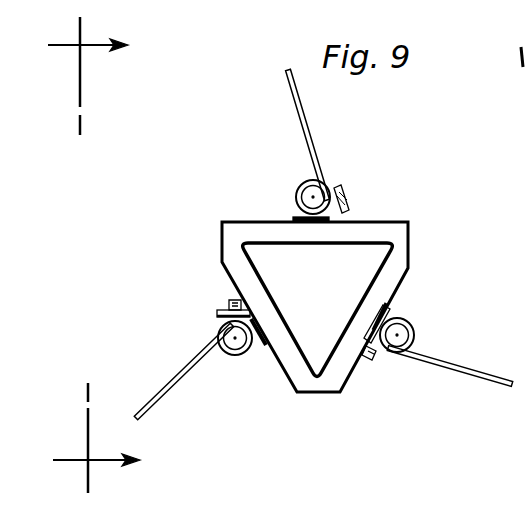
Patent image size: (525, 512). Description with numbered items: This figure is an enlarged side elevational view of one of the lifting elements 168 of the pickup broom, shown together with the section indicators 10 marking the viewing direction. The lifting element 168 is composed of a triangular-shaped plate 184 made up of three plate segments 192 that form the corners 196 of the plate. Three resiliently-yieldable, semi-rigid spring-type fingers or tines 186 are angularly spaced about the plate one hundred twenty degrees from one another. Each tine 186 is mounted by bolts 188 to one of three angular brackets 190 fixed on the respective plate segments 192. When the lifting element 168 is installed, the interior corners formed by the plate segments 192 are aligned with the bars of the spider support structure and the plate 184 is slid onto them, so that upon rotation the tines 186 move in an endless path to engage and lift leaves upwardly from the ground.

The section line / viewing direction 10 is at (87, 257).
The lifting element 168 is at (410, 190).
The triangular-shaped plate 184 is at (406, 273).
The tines 186 is at (310, 123).
The bolts 188 is at (348, 204).
The angular brackets 190 is at (336, 192).
The plate segments 192 is at (272, 223).
The corners 196 is at (221, 234).